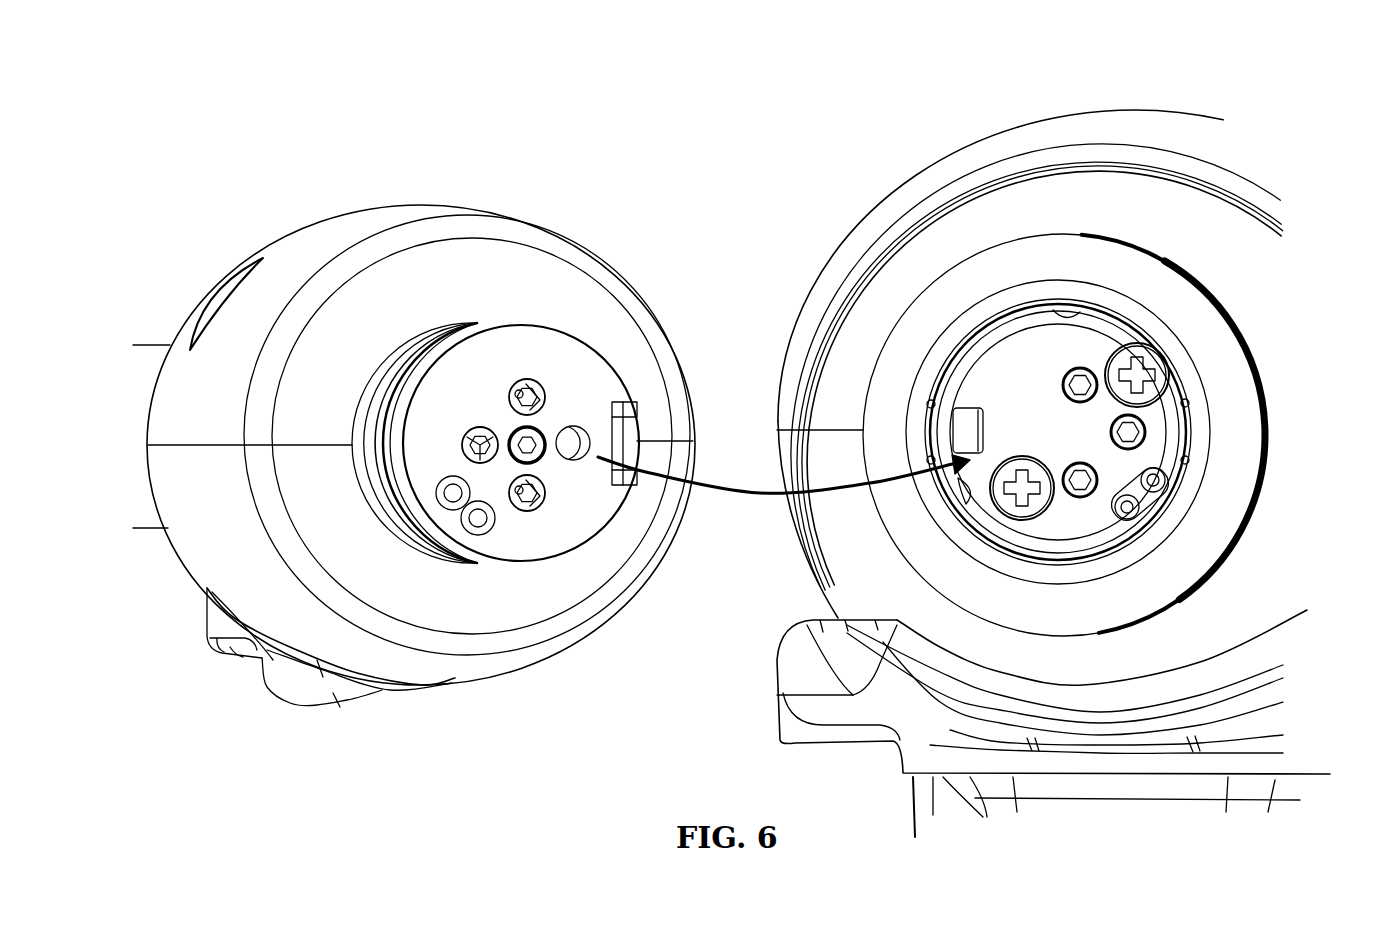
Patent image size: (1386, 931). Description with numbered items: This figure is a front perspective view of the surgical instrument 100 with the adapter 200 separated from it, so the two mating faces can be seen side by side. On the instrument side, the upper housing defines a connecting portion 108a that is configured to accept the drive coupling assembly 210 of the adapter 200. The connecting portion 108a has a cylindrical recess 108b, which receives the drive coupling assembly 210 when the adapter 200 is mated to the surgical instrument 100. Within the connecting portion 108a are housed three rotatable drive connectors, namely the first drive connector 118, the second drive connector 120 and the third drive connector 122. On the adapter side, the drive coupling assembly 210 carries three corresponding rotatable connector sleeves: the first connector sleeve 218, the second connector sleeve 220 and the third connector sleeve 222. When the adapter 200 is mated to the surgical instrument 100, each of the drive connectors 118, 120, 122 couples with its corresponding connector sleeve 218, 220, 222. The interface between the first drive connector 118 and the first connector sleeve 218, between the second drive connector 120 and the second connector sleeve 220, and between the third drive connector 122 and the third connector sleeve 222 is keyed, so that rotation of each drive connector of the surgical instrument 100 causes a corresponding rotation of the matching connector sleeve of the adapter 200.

The surgical instrument 100 is at (1148, 92).
The connecting portion 108a is at (1007, 240).
The cylindrical recess 108b is at (1008, 340).
The first drive connector 118 is at (1082, 500).
The second drive connector 120 is at (1135, 428).
The third drive connector 122 is at (1080, 372).
The adapter 200 is at (425, 190).
The drive coupling assembly 210 is at (480, 318).
The first connector sleeve 218 is at (547, 502).
The second connector sleeve 220 is at (478, 433).
The third connector sleeve 222 is at (527, 377).